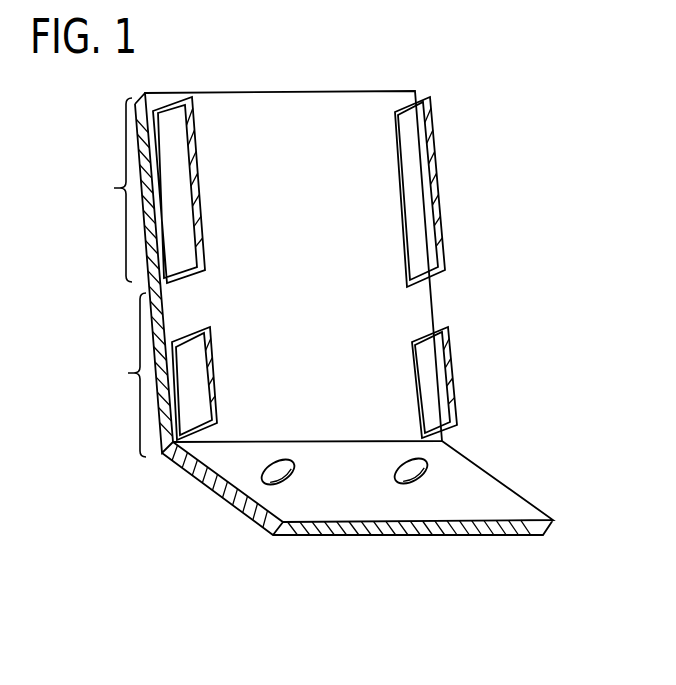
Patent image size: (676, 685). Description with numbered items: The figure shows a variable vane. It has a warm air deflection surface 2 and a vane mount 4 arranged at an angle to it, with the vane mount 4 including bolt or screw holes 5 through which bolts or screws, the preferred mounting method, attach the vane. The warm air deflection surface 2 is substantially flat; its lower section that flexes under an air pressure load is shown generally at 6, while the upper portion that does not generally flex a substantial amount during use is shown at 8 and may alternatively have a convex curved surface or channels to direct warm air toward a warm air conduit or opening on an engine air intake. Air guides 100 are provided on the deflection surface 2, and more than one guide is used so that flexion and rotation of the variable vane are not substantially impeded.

The warm air deflection surface 2 is at (303, 260).
The vane mount 4 is at (505, 502).
The bolt or screw holes 5 is at (275, 478).
The air guides 100 is at (190, 168).
The portion of the warm air deflection surface that does not generally flex 8 is at (111, 190).
The section that flexes under an air pressure load 6 is at (126, 375).